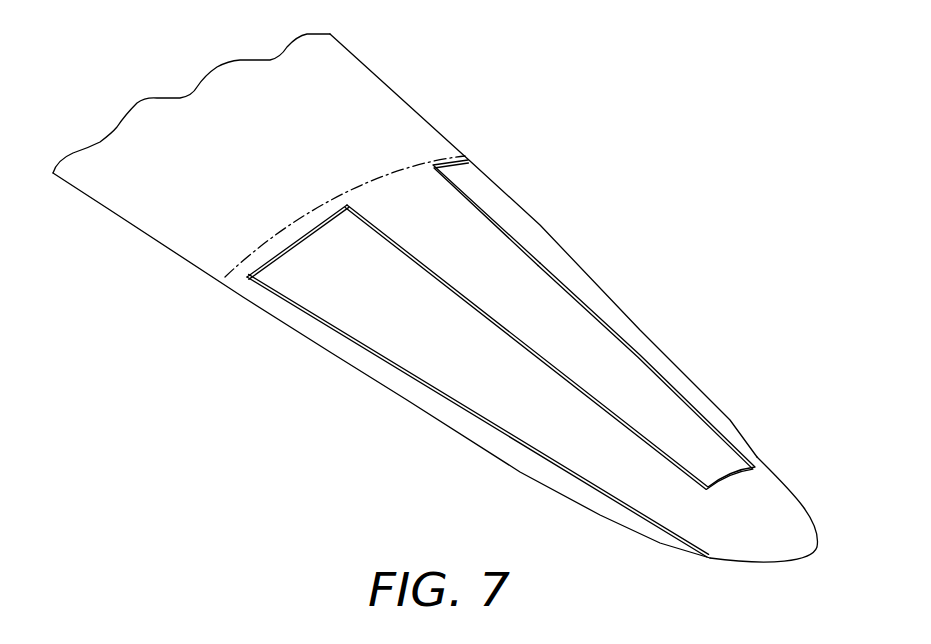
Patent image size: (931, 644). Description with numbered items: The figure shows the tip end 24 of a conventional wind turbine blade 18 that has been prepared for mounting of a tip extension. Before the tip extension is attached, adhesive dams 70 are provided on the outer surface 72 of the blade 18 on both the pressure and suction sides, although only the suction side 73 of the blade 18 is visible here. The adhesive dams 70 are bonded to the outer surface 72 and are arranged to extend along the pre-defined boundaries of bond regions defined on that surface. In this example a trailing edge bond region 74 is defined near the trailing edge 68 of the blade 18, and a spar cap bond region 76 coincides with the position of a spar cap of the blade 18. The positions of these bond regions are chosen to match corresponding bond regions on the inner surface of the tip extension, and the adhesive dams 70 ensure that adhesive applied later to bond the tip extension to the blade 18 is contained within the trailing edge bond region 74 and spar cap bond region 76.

The wind turbine blade 18 is at (152, 113).
The tip end 24 is at (435, 300).
The trailing edge 68 is at (620, 526).
The adhesive dams 70 is at (463, 158).
The outer surface 72 is at (422, 140).
The suction side 73 is at (332, 80).
The trailing edge bond region 74 is at (250, 288).
The spar cap bond region 76 is at (477, 336).